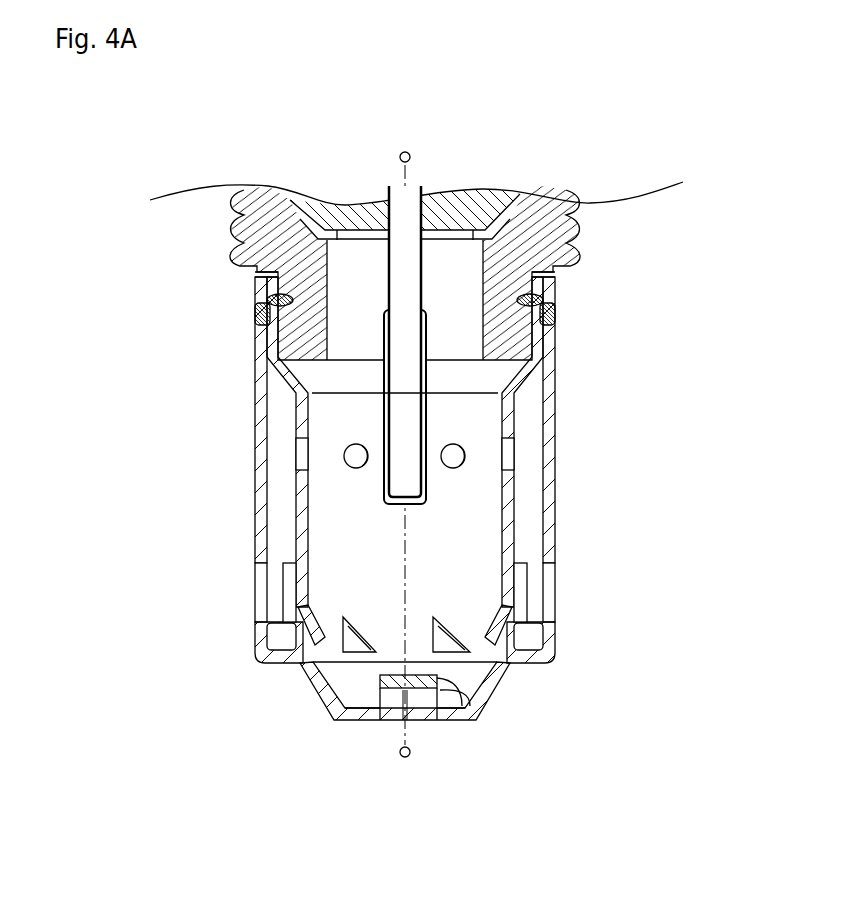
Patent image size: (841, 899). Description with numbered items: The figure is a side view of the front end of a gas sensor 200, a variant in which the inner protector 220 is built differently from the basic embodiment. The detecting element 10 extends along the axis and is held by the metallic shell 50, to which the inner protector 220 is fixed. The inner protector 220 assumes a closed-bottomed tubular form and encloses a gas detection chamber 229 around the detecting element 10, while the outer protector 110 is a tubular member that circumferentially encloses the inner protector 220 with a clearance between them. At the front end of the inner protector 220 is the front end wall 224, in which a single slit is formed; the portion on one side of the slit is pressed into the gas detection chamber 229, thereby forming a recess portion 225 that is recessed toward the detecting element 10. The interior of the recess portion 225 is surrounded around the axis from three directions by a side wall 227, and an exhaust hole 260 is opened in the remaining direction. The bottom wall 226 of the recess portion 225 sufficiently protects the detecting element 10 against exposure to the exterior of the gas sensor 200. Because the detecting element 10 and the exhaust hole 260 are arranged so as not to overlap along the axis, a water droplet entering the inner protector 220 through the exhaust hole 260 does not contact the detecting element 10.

The gas sensor 200 is at (612, 160).
The metallic shell 50 is at (600, 239).
The detecting element 10 is at (432, 269).
The outer protector 110 is at (568, 677).
The inner protector 220 is at (510, 707).
The gas detection chamber 229 is at (452, 534).
The front end wall 224 is at (363, 721).
The recess portion 225 is at (392, 732).
The bottom wall 226 is at (423, 712).
The side wall 227 is at (442, 704).
The exhaust hole 260 is at (376, 697).